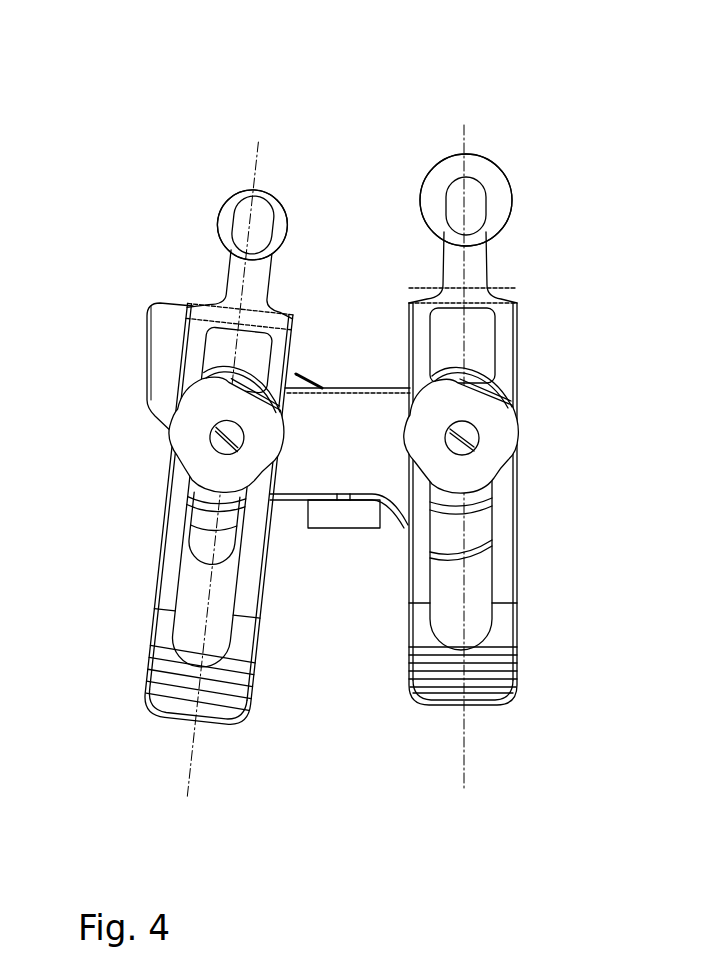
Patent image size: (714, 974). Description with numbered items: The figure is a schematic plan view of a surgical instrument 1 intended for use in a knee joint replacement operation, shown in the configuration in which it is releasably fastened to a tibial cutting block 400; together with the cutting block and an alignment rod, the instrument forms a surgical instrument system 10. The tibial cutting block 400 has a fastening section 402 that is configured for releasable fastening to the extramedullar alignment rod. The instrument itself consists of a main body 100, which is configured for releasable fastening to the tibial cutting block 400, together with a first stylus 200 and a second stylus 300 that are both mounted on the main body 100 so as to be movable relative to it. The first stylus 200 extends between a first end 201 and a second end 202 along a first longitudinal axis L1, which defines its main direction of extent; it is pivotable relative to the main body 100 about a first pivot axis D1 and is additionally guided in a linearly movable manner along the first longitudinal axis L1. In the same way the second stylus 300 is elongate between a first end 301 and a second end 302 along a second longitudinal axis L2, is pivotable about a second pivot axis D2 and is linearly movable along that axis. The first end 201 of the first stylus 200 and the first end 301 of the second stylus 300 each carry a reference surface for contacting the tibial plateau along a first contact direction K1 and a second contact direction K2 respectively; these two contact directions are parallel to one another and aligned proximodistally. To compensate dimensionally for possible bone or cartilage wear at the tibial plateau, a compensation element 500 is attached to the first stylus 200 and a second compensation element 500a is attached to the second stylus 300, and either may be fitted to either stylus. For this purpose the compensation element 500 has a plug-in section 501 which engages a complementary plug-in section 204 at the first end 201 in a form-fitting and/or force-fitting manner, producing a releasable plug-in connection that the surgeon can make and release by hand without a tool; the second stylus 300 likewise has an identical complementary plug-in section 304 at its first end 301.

The surgical instrument 1 is at (335, 426).
The surgical instrument system 10 is at (341, 110).
The main body 100 is at (352, 405).
The first stylus 200 is at (140, 491).
The first end 201 is at (230, 250).
The second end 202 is at (175, 723).
The complementary plug-in section 204 is at (279, 253).
The second stylus 300 is at (556, 462).
The first end 301 is at (447, 236).
The second end 302 is at (438, 707).
The complementary plug-in section 304 is at (503, 242).
The tibial cutting block 400 is at (165, 356).
The fastening section 402 is at (347, 530).
The compensation element 500 is at (160, 185).
The second compensation element 500a is at (543, 207).
The plug-in section 501 is at (414, 228).
The first pivot axis D1 is at (210, 442).
The second pivot axis D2 is at (480, 438).
The first contact direction K1 is at (253, 225).
The second contact direction K2 is at (463, 200).
The first longitudinal axis L1 is at (188, 755).
The second longitudinal axis L2 is at (465, 750).